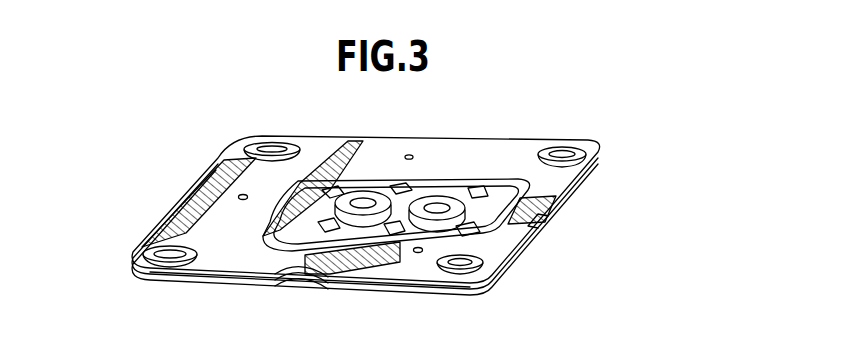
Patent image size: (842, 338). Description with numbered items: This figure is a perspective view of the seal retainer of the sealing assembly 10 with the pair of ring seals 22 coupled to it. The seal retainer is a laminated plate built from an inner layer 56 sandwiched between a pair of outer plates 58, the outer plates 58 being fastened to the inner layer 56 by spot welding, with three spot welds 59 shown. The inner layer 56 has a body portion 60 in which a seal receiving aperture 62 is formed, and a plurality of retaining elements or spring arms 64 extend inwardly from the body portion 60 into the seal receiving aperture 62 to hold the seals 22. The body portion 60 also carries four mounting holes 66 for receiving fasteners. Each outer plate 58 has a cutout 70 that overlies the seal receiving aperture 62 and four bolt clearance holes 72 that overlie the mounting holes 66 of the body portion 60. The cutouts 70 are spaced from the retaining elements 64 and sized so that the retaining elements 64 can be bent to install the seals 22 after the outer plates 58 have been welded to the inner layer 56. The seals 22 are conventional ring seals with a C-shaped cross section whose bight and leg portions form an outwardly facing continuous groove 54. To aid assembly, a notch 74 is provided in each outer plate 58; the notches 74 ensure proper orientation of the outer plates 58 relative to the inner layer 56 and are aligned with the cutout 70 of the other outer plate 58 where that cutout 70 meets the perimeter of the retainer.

The sealing assembly 10 is at (128, 100).
The seals 22 is at (332, 205).
The continuous groove 54 is at (488, 245).
The inner layer 56 is at (605, 157).
The outer plates 58 is at (232, 152).
The spot welds 59 is at (240, 195).
The body portion 60 is at (272, 264).
The seal receiving aperture 62 is at (372, 236).
The retaining elements 64 is at (405, 195).
The mounting holes 66 is at (298, 152).
The cutout 70 is at (268, 228).
The bolt clearance holes 72 is at (272, 144).
The notch 74 is at (302, 272).